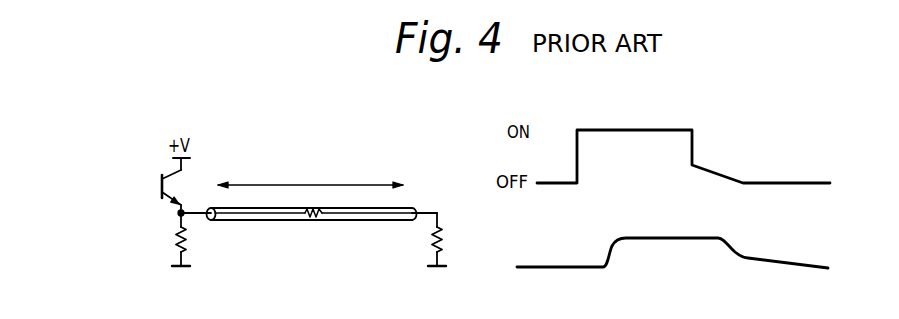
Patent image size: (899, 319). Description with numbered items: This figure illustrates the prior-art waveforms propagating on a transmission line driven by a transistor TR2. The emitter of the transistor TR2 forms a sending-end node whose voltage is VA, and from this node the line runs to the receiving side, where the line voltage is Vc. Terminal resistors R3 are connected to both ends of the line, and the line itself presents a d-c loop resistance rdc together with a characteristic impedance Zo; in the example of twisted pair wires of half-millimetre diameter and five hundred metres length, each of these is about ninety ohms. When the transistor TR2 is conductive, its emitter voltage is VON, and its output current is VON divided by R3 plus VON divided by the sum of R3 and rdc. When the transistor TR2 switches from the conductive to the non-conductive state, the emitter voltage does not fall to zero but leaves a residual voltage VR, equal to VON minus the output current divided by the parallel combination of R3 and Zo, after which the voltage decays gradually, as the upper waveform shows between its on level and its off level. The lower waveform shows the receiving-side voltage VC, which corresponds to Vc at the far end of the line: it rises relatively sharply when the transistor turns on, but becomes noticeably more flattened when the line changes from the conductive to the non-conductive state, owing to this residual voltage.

The transistor TR2 is at (162, 187).
The terminal resistor R3 is at (328, 239).
The loop d-c resistance of the transmission line rdc is at (312, 228).
The characteristic impedance of the transmission line Zo is at (339, 186).
The emitter voltage VA is at (179, 213).
The receiving-side waveform Vc is at (436, 206).
The emitter voltage when transistor is conductive VON is at (597, 135).
The residual emitter voltage VR is at (682, 167).
The receiving-side voltage waveform VC is at (642, 245).